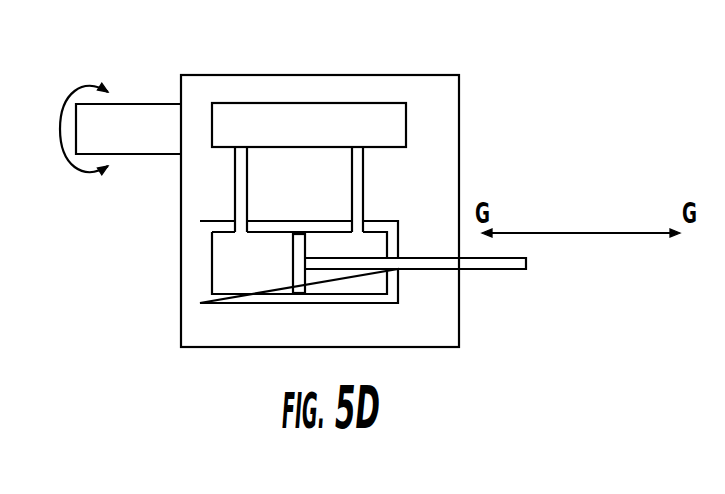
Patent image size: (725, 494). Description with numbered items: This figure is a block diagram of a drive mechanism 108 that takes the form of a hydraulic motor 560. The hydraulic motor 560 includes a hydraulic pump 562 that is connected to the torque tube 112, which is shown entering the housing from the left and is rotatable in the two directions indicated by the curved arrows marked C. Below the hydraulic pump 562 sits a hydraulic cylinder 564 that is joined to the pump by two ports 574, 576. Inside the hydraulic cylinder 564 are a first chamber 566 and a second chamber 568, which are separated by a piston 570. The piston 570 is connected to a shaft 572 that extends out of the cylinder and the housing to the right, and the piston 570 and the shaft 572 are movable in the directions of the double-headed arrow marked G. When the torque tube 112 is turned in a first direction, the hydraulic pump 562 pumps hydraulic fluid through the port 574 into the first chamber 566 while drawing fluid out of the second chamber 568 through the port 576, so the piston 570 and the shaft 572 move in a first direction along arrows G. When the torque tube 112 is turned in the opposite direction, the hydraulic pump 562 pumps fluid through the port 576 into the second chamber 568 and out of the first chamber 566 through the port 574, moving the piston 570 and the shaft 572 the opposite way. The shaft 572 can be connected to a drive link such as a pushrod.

The drive mechanism 108 is at (460, 72).
The torque tube 112 is at (140, 104).
The hydraulic motor 560 is at (433, 147).
The hydraulic pump 562 is at (323, 112).
The hydraulic cylinder 564 is at (300, 305).
The first chamber 566 is at (248, 278).
The second chamber 568 is at (363, 278).
The piston 570 is at (298, 235).
The shaft 572 is at (422, 265).
The port 574 is at (246, 177).
The port 576 is at (362, 172).